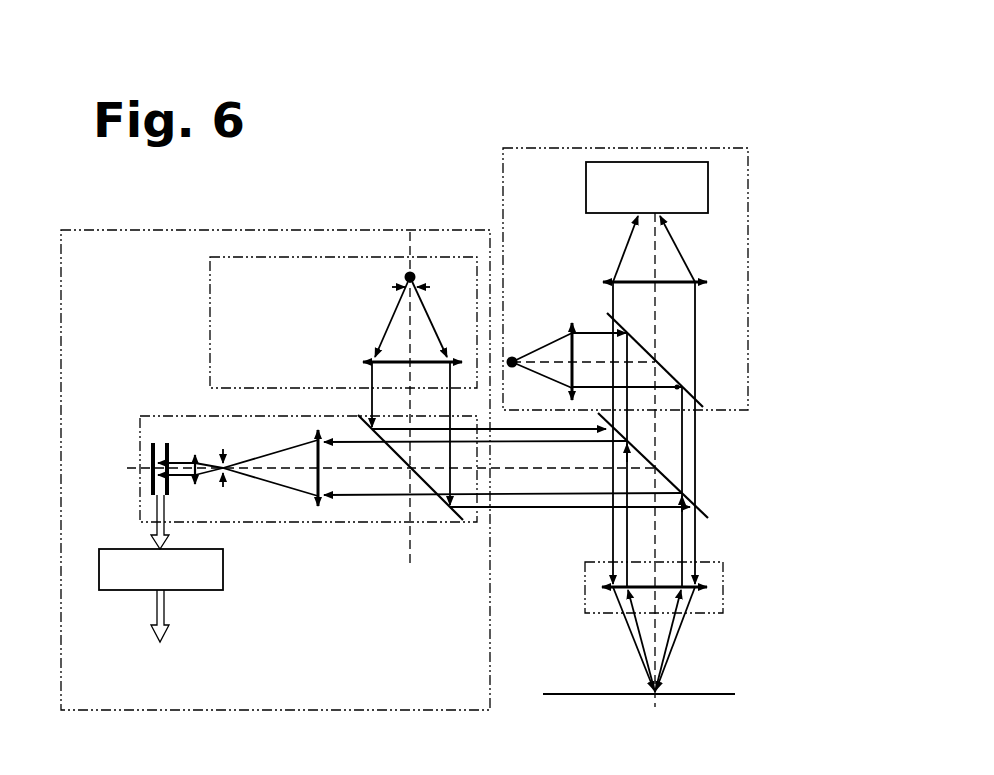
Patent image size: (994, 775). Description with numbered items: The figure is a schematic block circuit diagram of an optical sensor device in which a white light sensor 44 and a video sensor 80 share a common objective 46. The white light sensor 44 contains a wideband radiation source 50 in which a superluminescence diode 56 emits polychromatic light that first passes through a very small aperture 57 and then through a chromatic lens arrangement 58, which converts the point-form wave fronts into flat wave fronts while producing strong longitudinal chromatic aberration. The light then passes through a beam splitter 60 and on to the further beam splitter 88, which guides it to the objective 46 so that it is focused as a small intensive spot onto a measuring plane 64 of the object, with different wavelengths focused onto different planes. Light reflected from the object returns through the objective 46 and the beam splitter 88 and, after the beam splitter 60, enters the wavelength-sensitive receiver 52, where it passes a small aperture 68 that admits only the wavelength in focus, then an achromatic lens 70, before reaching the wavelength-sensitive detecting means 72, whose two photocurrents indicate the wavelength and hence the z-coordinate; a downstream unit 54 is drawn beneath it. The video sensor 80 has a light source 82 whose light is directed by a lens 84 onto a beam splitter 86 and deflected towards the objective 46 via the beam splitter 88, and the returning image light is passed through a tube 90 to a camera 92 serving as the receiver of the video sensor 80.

The white light sensor 44 is at (82, 228).
The objective 46 is at (722, 588).
The wideband radiation source 50 is at (263, 256).
The wavelength-sensitive receiver 52 is at (313, 524).
The evaluation unit 54 is at (205, 583).
The superluminescence diode 56 is at (412, 271).
The aperture 57 is at (396, 284).
The chromatic lens arrangement 58 is at (378, 356).
The beam splitter 60 is at (446, 506).
The measuring plane 64 is at (715, 693).
The aperture 68 is at (222, 458).
The achromatic lens 70 is at (194, 456).
The wavelength-sensitive detecting means 72 is at (150, 469).
The video sensor 80 is at (679, 147).
The light source 82 is at (510, 356).
The lens 84 is at (570, 333).
The beam splitter 86 is at (667, 370).
The beam splitter 88 is at (705, 510).
The tube 90 is at (610, 280).
The camera 92 is at (598, 185).